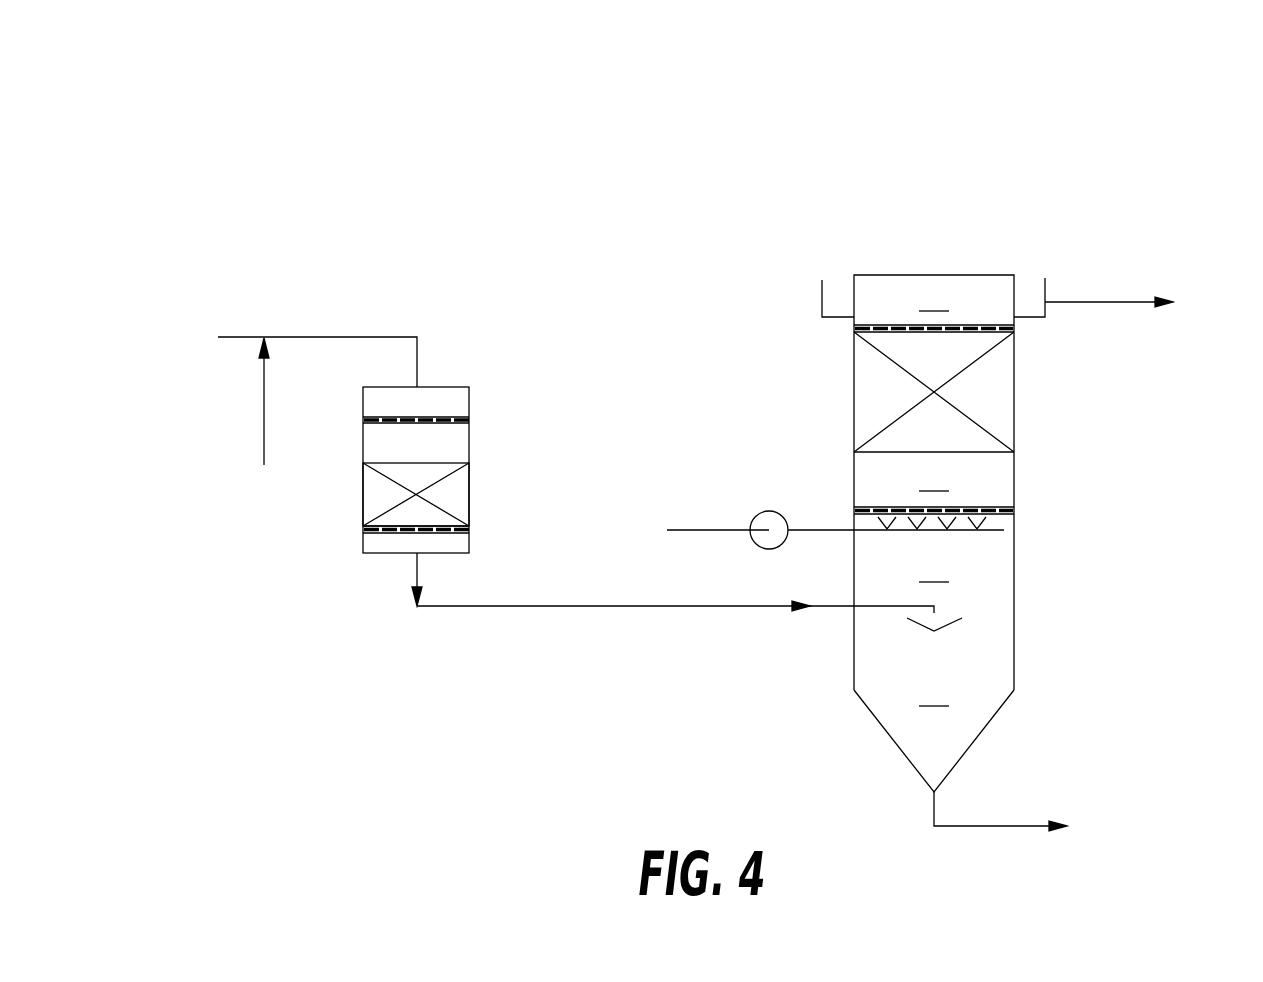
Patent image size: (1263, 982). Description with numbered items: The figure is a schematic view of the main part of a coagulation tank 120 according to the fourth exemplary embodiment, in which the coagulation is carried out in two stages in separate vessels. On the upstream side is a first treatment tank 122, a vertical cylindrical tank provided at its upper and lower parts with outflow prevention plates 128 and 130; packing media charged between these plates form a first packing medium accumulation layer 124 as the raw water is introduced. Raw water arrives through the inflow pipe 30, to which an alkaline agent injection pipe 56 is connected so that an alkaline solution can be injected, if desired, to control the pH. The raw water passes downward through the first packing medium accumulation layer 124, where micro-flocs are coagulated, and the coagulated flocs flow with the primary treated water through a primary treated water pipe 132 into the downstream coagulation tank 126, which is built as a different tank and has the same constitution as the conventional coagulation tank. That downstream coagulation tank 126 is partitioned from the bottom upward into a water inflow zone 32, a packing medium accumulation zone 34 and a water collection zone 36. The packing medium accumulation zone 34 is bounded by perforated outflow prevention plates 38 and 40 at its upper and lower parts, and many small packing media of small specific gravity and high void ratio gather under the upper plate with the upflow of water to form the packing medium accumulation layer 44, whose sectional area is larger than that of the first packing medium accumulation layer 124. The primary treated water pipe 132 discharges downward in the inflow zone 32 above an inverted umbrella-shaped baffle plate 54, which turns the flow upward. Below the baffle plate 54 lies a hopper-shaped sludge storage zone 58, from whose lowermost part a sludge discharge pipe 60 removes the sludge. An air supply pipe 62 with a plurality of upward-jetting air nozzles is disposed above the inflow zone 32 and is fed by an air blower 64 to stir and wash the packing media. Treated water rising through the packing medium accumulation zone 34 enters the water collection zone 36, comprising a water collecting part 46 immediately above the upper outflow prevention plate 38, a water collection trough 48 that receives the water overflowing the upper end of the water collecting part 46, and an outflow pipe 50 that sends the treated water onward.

The coagulation tank 120 is at (660, 255).
The inflow pipe 30 is at (305, 337).
The alkaline agent injection pipe 56 is at (264, 428).
The first treatment tank 122 is at (460, 421).
The outflow prevention plate 128 is at (437, 413).
The first packing medium accumulation layer 124 is at (452, 492).
The outflow prevention plate 130 is at (437, 535).
The primary treated water pipe 132 is at (740, 605).
The air supply pipe 62 is at (814, 526).
The air blower 64 is at (778, 548).
The coagulation tank 126 is at (998, 519).
The water collection zone 36 is at (934, 296).
The water collecting part 46 is at (988, 297).
The water collection trough 48 is at (1047, 290).
The outflow pipe 50 is at (1108, 302).
The outflow prevention plate 38 is at (978, 333).
The packing medium accumulation layer 44 is at (993, 402).
The packing medium accumulation zone 34 is at (934, 475).
The outflow prevention plate 40 is at (990, 505).
The water inflow zone 32 is at (934, 566).
The baffle plate 54 is at (945, 624).
The sludge storage zone 58 is at (934, 733).
The sludge discharge pipe 60 is at (1000, 826).